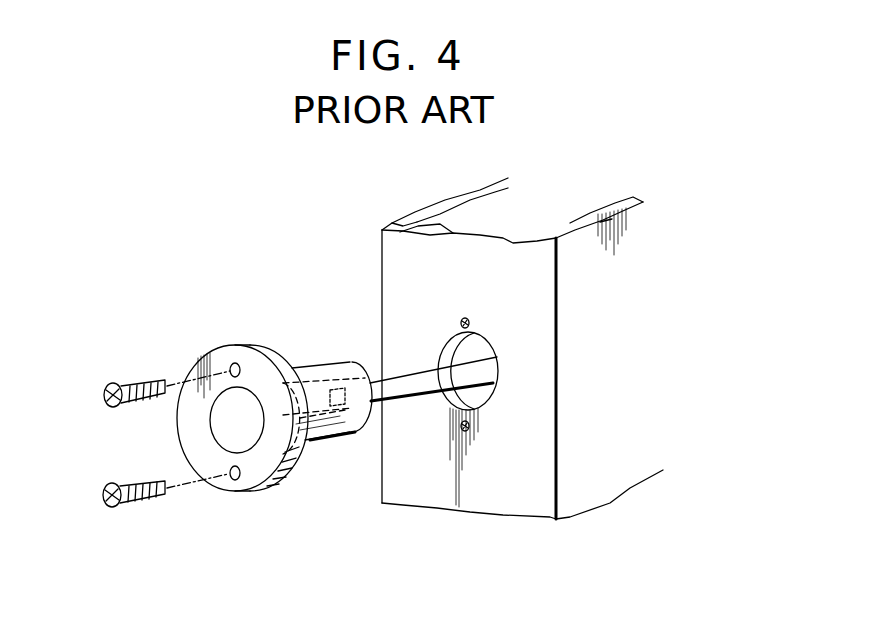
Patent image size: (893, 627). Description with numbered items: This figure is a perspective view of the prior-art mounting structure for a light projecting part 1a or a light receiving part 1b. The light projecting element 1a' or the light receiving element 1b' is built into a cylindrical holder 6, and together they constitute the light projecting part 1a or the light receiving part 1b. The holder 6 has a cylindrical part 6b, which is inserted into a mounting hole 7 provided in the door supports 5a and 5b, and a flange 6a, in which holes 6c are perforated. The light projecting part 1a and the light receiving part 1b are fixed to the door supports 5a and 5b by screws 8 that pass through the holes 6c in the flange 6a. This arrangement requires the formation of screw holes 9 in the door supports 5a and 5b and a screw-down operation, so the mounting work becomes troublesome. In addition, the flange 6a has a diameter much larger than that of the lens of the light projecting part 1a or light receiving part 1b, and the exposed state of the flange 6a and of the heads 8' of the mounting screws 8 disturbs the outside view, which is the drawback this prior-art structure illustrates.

The light projecting part 1a is at (281, 413).
The light receiving part 1b is at (281, 413).
The light projecting element 1a' is at (334, 435).
The light receiving element 1b' is at (334, 435).
The door support 5a is at (541, 322).
The door support 5b is at (522, 348).
The cylindrical holder 6 is at (274, 424).
The flange 6a is at (260, 468).
The cylindrical part 6b is at (325, 368).
The holes 6c is at (233, 363).
The mounting hole 7 is at (486, 340).
The screws 8 is at (147, 442).
The heads of mounting screws 8' is at (93, 448).
The screw holes 9 is at (470, 318).